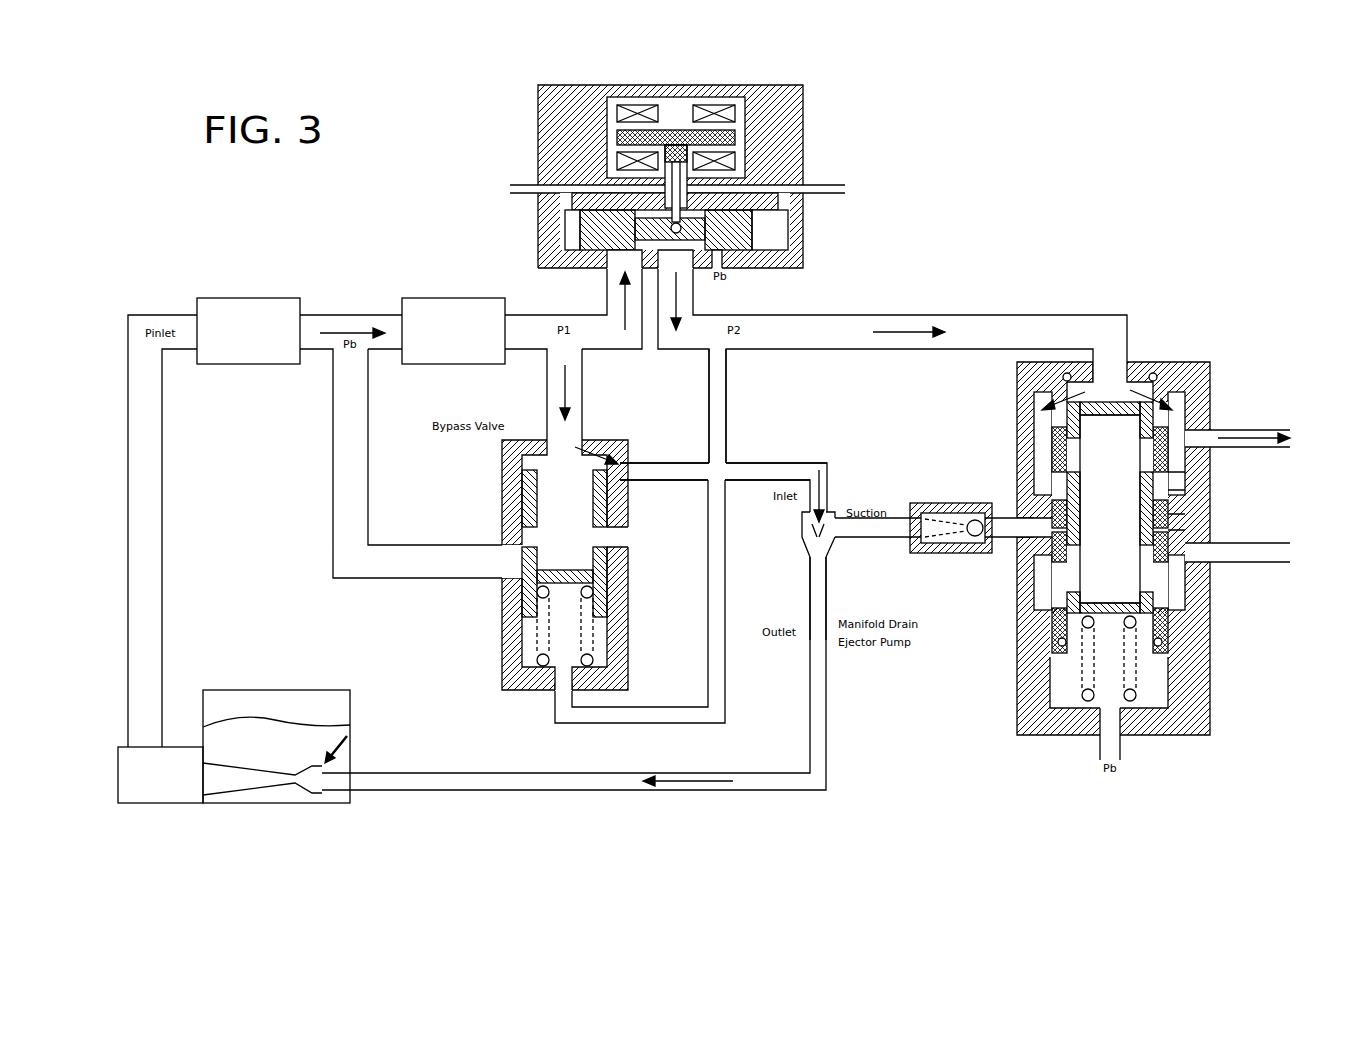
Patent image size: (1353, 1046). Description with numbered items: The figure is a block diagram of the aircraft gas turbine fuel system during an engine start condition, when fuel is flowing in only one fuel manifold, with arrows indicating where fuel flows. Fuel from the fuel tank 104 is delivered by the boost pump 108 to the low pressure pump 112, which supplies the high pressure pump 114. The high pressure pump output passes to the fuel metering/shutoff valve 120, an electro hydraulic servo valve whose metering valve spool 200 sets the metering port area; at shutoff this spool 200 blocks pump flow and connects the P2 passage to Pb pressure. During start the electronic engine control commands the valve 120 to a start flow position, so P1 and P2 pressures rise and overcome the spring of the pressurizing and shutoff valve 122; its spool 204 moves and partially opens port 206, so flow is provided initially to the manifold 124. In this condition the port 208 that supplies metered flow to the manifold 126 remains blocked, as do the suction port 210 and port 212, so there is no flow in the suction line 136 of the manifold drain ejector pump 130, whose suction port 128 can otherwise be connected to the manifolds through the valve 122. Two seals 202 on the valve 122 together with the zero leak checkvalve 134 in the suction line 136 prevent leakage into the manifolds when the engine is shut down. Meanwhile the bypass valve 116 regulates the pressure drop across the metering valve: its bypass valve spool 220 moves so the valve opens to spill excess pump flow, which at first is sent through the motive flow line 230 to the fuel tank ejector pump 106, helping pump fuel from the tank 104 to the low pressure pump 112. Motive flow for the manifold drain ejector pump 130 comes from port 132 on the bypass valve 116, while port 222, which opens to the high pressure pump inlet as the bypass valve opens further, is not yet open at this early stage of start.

The fuel tank 104 is at (307, 706).
The fuel tank ejector pump 106 is at (293, 757).
The boost pump 108 is at (130, 805).
The low pressure pump 112 is at (212, 308).
The high pressure pump 114 is at (418, 308).
The bypass valve 116 is at (500, 648).
The fuel metering/shutoff valve 120 is at (694, 177).
The pressurizing and shutoff valve 122 is at (1136, 510).
The manifold 124 is at (1240, 452).
The manifold 126 is at (1250, 562).
The suction port 128 is at (832, 533).
The manifold drain ejector pump 130 is at (803, 560).
The port 132 is at (633, 468).
The checkvalve 134 is at (967, 492).
The suction line 136 is at (936, 490).
The metering valve spool 200 is at (760, 250).
The seals 202 is at (1146, 372).
The spool 204 is at (1107, 403).
The port 206 is at (1047, 400).
The port 208 is at (1170, 480).
The suction port 210 is at (1178, 522).
The port 212 is at (1043, 582).
The bypass valve spool 220 is at (553, 565).
The port 222 is at (600, 538).
The motive flow line 230 is at (797, 468).